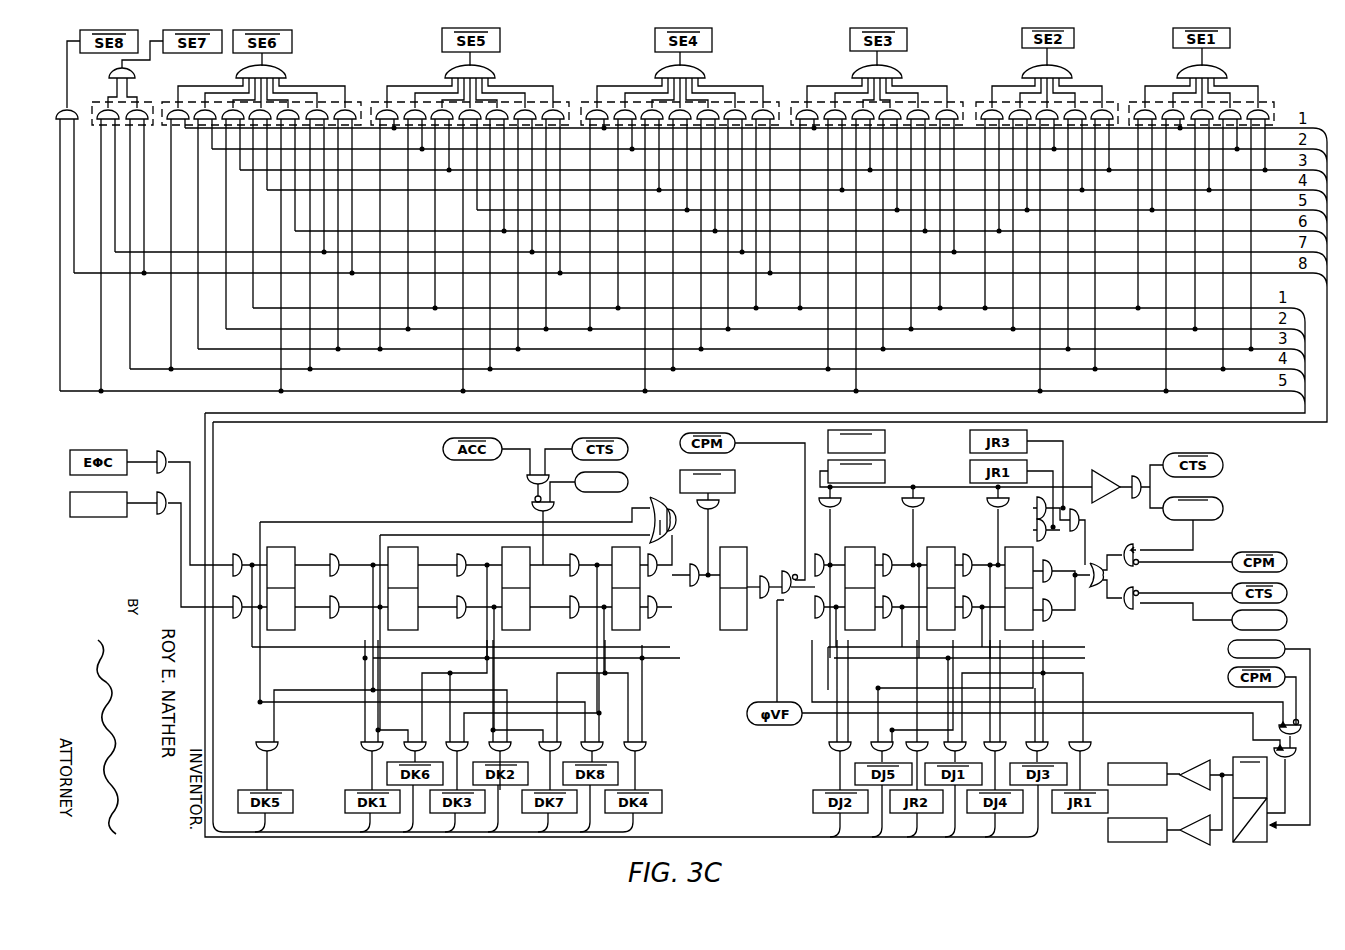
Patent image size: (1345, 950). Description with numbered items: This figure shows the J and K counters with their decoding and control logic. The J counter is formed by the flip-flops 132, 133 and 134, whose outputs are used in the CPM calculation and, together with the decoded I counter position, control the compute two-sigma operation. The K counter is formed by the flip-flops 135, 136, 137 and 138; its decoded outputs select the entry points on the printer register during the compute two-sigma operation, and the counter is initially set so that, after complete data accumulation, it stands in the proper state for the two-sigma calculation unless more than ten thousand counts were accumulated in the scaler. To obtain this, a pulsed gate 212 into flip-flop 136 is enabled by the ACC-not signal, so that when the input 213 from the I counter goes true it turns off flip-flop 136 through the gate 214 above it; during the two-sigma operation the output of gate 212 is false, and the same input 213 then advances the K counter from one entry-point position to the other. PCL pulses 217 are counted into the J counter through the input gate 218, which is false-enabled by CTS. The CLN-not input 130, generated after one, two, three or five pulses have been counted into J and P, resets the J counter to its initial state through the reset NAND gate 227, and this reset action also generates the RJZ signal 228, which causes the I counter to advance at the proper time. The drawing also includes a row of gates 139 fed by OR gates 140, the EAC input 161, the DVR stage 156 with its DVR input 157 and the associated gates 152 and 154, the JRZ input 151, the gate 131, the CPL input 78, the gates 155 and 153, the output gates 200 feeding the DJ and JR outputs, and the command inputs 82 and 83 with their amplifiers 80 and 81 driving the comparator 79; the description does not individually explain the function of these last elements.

The AND gates 139 is at (70, 108).
The OR gates 140 is at (135, 75).
The EAC input 161 is at (110, 517).
The flip-flop 138 is at (296, 547).
The flip-flop 137 is at (410, 547).
The flip-flop 136 is at (502, 549).
The flip-flop 135 is at (612, 549).
The pulsed gate 212 is at (527, 482).
The iR4 input 213 is at (628, 482).
The gate 214 is at (554, 508).
The DVR input 157 is at (735, 474).
The DVR register stage 156 is at (730, 632).
The gate 152 is at (766, 600).
The gate 154 is at (788, 570).
The JRZ input 151 is at (885, 445).
The RJZ signal 228 is at (885, 471).
The flip-flop 134 is at (868, 547).
The flip-flop 133 is at (948, 547).
The flip-flop 132 is at (1046, 537).
The AND gate 131 is at (1125, 543).
The CLN-not input 130 is at (1223, 506).
The reset NAND gate 227 is at (1100, 472).
The PCL pulses 217 is at (1287, 617).
The input gate 218 is at (1127, 612).
The CPL input 78 is at (1228, 650).
The AND gate 155 is at (1262, 728).
The AND gate 153 is at (1290, 762).
The AND gates 200 is at (833, 748).
The CMD1 command input 82 is at (1140, 763).
The amplifier 80 is at (1200, 758).
The CMD2 command input 83 is at (1130, 842).
The amplifier 81 is at (1200, 845).
The comparator CMP 79 is at (1250, 842).